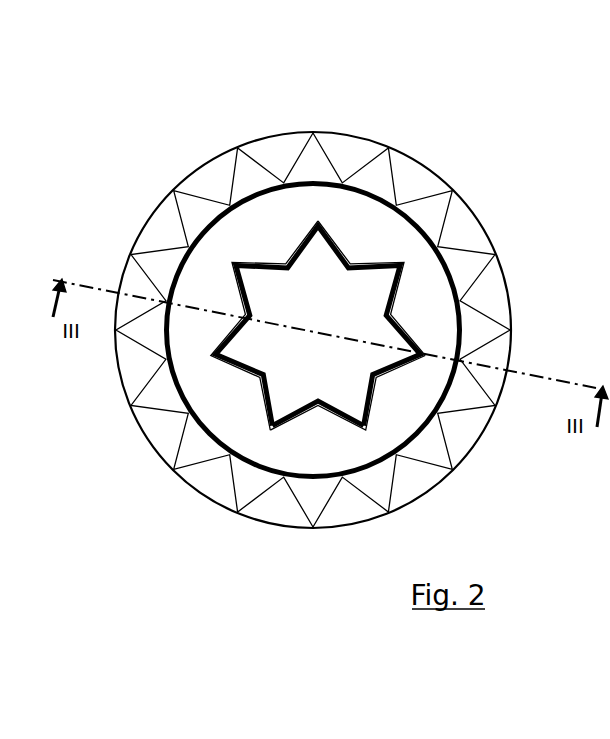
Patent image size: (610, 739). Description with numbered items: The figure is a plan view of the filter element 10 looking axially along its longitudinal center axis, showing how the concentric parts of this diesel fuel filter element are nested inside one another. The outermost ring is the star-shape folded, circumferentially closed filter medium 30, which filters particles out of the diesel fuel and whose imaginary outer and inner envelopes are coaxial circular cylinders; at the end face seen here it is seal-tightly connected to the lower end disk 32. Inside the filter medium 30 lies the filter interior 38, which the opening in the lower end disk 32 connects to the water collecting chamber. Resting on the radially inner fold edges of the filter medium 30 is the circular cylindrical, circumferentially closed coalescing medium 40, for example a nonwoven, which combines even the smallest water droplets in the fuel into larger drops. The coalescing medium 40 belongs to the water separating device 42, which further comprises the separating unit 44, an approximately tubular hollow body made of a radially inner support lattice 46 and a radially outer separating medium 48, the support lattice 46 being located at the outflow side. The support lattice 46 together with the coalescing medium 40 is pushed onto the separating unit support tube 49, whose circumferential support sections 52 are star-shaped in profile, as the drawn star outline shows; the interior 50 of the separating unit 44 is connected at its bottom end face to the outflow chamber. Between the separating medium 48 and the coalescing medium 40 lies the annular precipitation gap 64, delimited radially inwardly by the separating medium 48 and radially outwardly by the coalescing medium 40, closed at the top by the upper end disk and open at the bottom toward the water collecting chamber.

The filter element 10 is at (200, 123).
The filter medium 30 is at (470, 287).
The lower end disk 32 is at (160, 437).
The filter interior 38 is at (233, 243).
The coalescing medium 40 is at (180, 267).
The water separating device 42 is at (375, 222).
The separating unit 44 is at (400, 283).
The support lattice 46 is at (245, 300).
The separating medium 48 is at (388, 378).
The separating unit support tube 49 is at (314, 395).
The interior of the separating unit 50 is at (310, 310).
The circumferential support sections 52 is at (378, 365).
The precipitation gap 64 is at (220, 414).